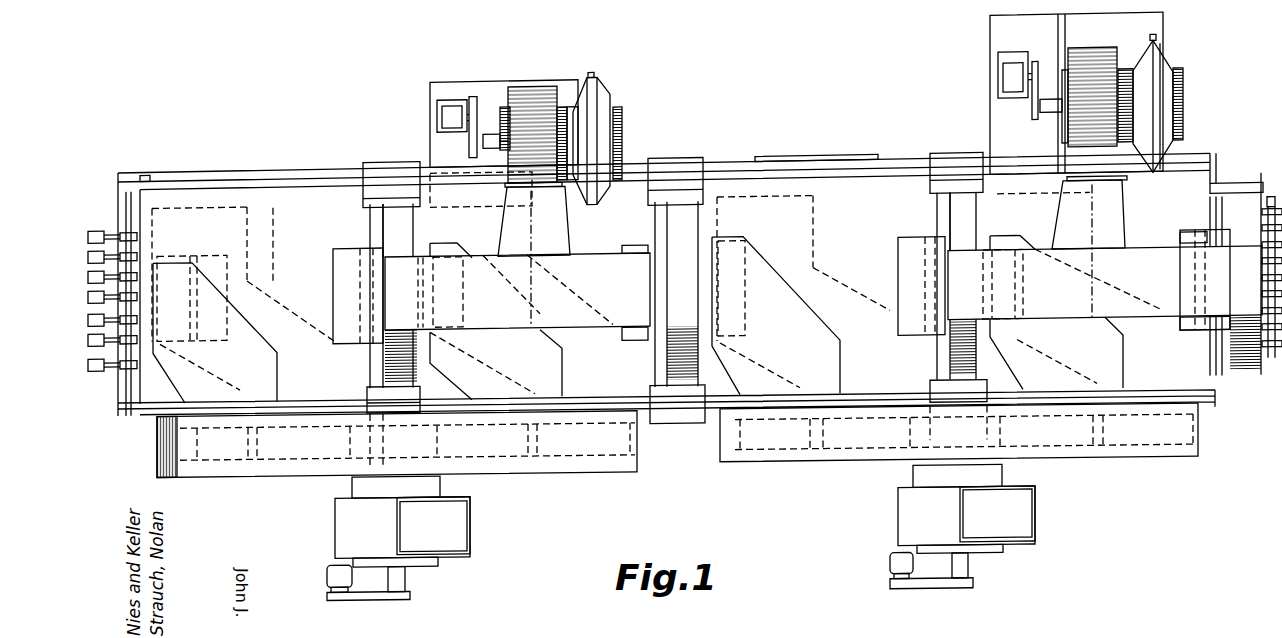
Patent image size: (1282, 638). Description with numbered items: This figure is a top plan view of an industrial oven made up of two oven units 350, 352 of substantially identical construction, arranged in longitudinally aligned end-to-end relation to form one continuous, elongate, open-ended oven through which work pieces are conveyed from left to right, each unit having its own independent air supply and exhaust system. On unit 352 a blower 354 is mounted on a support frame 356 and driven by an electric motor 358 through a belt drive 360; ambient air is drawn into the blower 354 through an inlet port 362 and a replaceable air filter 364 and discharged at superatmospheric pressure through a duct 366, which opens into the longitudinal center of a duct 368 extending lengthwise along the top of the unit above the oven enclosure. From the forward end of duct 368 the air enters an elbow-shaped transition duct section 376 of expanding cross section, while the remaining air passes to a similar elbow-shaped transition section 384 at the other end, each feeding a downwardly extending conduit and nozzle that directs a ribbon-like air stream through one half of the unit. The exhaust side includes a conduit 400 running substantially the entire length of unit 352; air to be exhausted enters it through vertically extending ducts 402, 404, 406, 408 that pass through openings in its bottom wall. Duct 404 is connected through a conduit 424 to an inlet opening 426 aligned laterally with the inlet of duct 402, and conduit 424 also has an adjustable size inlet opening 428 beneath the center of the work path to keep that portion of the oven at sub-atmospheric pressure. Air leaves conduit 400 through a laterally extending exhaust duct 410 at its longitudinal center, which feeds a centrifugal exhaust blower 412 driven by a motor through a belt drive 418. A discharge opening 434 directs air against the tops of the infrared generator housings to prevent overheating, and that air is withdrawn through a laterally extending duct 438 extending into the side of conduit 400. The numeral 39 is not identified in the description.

The oven unit 350 is at (378, 155).
The oven unit 352 is at (932, 165).
The blower 354 is at (533, 102).
The support frame 356 is at (480, 88).
The electric motor 358 is at (447, 119).
The belt drive 360 is at (490, 141).
The inlet port 362 is at (622, 132).
The replaceable air filter 364 is at (592, 106).
The duct 366 is at (550, 229).
The duct 368 is at (610, 255).
The elbow-shaped transition duct section 376 is at (392, 235).
The elbow-shaped transition section 384 is at (1250, 193).
The exhaust conduit 400 is at (228, 481).
The vertically extending duct 402 is at (192, 468).
The vertically extending duct 404 is at (278, 466).
The vertically extending duct 406 is at (505, 471).
The vertically extending duct 408 is at (569, 471).
The exhaust duct 410 is at (433, 489).
The centrifugal exhaust blower 412 is at (348, 528).
The belt drive 418 is at (365, 602).
The conduit 424 is at (302, 311).
The inlet opening 426 is at (193, 218).
The adjustable size inlet opening 428 is at (197, 349).
The discharge opening 434 is at (330, 271).
The laterally extending duct 438 is at (253, 342).
The clamp 39 is at (1248, 240).